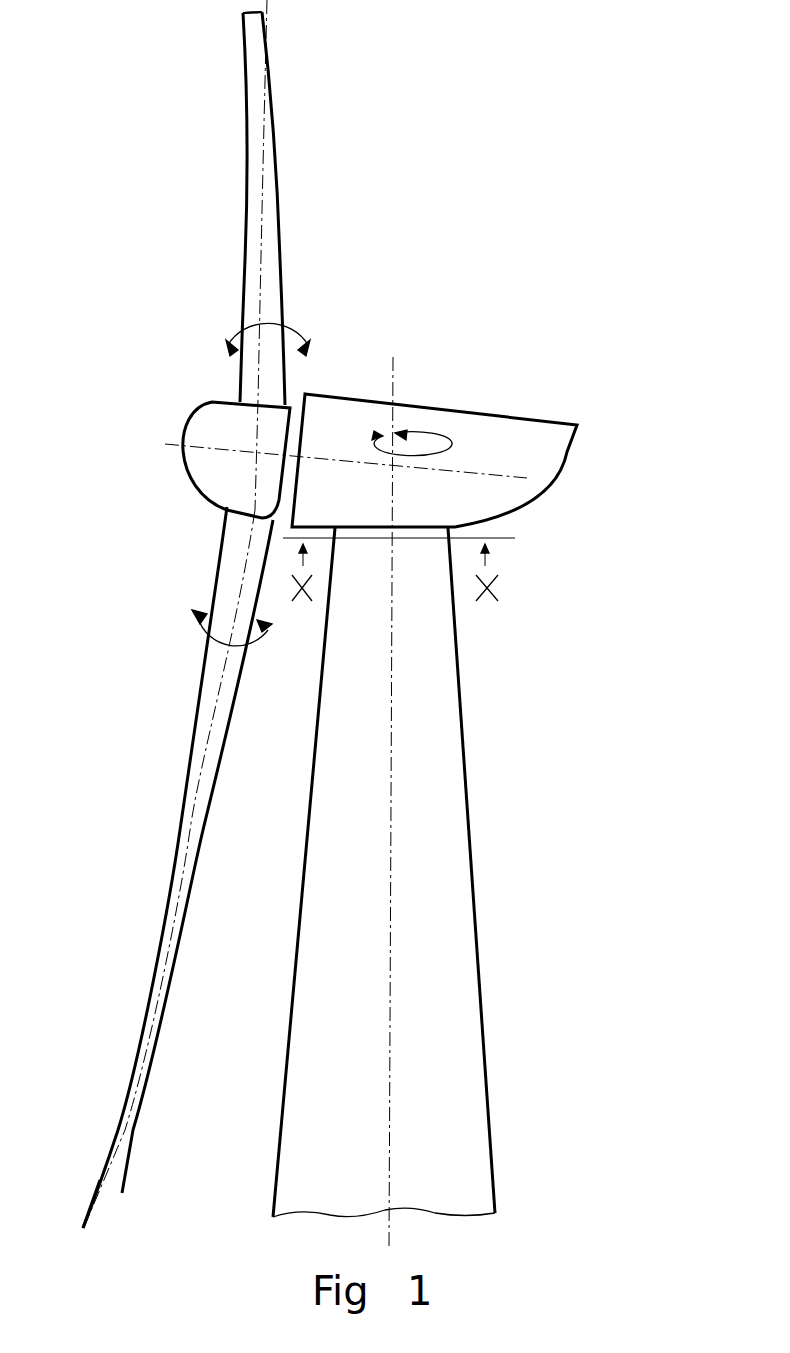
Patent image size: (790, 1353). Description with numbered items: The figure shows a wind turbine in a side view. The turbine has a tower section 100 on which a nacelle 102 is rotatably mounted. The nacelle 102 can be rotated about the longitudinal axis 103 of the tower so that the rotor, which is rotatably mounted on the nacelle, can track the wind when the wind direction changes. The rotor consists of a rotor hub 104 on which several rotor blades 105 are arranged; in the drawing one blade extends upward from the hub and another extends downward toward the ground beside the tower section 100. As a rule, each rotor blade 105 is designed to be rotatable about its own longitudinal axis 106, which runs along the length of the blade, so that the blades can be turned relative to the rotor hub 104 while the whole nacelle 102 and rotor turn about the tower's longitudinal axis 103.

The tower section 100 is at (428, 872).
The nacelle 102 is at (407, 497).
The longitudinal axis of the tower 103 is at (426, 802).
The rotor hub 104 is at (187, 460).
The rotor blade 105 is at (225, 614).
The longitudinal axis of the rotor blade 106 is at (217, 614).